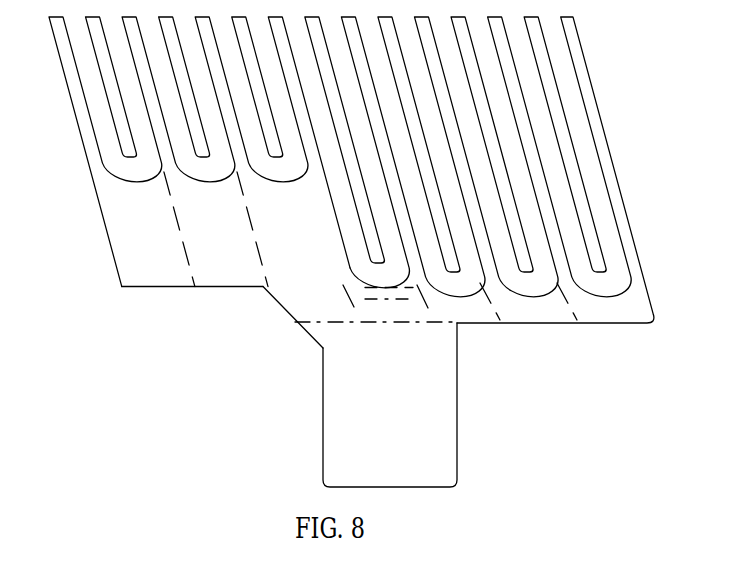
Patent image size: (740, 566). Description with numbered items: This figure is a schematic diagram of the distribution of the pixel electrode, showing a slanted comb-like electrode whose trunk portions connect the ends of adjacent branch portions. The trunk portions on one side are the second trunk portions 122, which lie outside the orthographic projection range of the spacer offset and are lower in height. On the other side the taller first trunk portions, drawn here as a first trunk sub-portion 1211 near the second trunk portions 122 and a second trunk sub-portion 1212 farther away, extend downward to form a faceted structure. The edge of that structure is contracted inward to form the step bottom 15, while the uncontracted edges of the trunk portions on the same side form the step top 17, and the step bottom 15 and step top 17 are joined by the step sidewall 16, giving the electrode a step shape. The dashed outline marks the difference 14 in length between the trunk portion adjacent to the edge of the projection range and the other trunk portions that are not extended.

The first heat exchange portion 1211 is at (135, 236).
The second trunk portion 122 is at (465, 310).
The step bottom 15 is at (203, 286).
The step sidewall 16 is at (282, 307).
The connecting tab 1212 is at (370, 312).
The step top 17 is at (387, 325).
The difference in length 14 is at (367, 292).